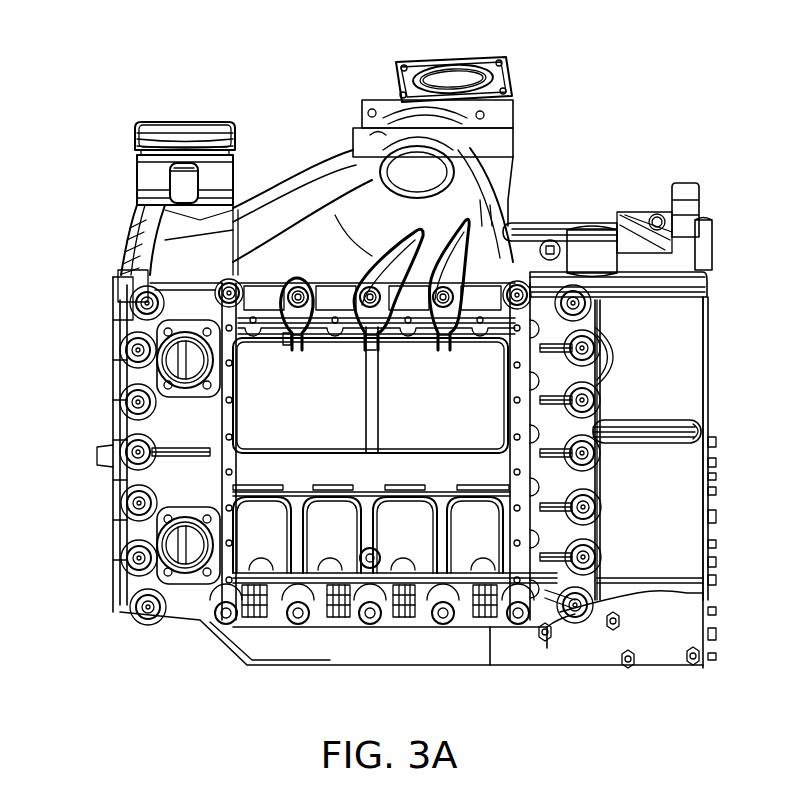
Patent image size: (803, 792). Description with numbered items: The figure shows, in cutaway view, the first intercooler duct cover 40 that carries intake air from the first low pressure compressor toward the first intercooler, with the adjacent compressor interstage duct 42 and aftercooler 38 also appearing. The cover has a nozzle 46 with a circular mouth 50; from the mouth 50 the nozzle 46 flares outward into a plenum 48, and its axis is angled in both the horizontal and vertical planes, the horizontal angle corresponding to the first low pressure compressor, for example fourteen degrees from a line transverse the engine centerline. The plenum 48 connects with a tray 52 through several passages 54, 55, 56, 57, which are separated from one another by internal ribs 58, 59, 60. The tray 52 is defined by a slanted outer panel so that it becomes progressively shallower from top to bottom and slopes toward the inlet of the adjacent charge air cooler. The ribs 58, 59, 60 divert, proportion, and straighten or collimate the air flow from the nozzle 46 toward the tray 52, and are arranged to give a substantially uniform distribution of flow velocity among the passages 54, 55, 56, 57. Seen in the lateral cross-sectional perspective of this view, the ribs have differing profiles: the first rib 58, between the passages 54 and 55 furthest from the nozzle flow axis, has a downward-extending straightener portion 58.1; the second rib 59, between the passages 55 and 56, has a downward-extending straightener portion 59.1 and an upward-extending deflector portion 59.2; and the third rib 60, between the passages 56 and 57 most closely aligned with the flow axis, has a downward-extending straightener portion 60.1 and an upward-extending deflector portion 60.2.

The aftercooler 38 is at (672, 379).
The first intercooler duct cover 40 is at (384, 337).
The compressor interstage duct 42 is at (127, 235).
The nozzle 46 is at (447, 173).
The plenum 48 is at (404, 161).
The circular mouth 50 is at (428, 90).
The tray 52 is at (294, 426).
The passage 54 is at (278, 312).
The passage 55 is at (350, 312).
The passage 56 is at (423, 312).
The passage 57 is at (495, 312).
The first rib 58 is at (285, 338).
The straightener portion 58.1 is at (300, 347).
The second rib 59 is at (363, 315).
The straightener portion 59.1 is at (383, 349).
The deflector portion 59.2 is at (336, 210).
The third rib 60 is at (493, 257).
The straightener portion 60.1 is at (450, 350).
The deflector portion 60.2 is at (380, 165).